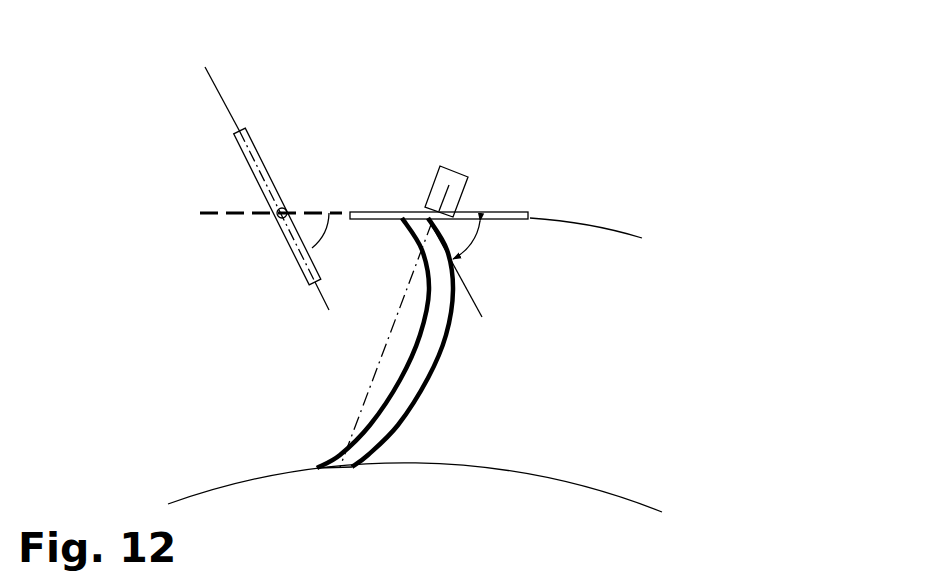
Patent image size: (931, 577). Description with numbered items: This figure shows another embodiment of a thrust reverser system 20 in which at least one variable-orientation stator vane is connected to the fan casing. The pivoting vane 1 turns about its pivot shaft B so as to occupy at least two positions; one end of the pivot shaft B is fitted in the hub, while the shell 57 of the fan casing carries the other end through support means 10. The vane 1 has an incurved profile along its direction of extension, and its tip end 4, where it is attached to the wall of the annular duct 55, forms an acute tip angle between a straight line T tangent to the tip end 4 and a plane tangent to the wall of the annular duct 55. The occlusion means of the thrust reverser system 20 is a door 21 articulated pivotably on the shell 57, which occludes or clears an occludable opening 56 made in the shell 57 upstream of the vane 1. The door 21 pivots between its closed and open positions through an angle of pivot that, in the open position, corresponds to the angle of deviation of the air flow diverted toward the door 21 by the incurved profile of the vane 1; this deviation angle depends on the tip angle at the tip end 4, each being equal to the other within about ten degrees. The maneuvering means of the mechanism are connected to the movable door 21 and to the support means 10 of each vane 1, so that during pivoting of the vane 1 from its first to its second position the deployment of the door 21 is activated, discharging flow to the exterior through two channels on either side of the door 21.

The pivoting vane 1 is at (435, 345).
The tip end 4 is at (416, 238).
The support means 10 is at (464, 163).
The thrust reverser system 20 is at (595, 156).
The door 21 is at (288, 146).
The annular duct 55 is at (474, 406).
The occludable opening 56 is at (274, 219).
The shell 57 is at (574, 220).
The pivot shaft B is at (371, 378).
The straight line tangent to the tip end T is at (473, 296).
The axis X is at (261, 208).